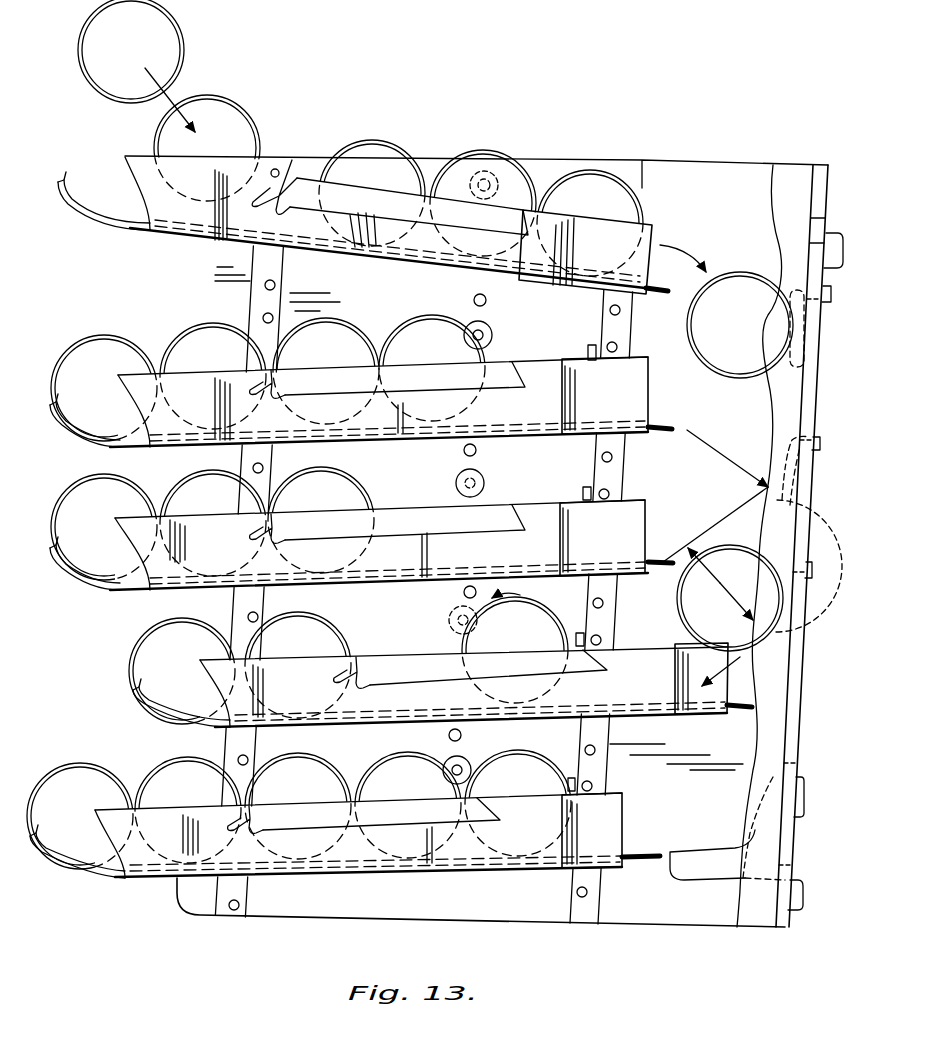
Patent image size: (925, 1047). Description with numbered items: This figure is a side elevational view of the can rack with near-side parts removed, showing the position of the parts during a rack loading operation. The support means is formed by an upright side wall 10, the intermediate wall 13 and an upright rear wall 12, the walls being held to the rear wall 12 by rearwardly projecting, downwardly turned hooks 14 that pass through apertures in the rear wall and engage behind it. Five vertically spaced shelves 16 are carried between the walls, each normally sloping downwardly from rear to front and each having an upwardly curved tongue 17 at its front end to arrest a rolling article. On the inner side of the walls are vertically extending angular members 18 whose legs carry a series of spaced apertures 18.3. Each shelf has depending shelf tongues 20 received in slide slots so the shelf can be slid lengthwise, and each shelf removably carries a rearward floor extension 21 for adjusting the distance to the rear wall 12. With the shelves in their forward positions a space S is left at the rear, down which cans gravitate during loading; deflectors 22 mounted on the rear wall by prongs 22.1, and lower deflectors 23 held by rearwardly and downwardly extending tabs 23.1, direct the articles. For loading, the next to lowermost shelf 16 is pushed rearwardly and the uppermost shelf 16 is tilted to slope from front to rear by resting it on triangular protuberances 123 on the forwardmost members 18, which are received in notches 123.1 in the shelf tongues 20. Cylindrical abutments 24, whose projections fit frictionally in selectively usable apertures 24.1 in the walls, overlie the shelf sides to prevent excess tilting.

The side wall 10 is at (792, 178).
The rear wall 12 is at (794, 717).
The intermediate wall 13 is at (665, 178).
The hook 14 is at (808, 262).
The shelf 16 is at (102, 232).
The upwardly curved tongue 17 is at (66, 190).
The angular member 18 is at (262, 305).
The apertures 18.3 is at (617, 346).
The shelf tongue 20 is at (408, 213).
The shelf floor extension 21 is at (657, 412).
The deflector 22 is at (792, 362).
The prong 22.1 is at (810, 437).
The lower deflector 23 is at (693, 887).
The tab 23.1 is at (800, 780).
The abutment 24 is at (500, 168).
The apertures 24.1 is at (464, 452).
The triangular protuberance 123 is at (262, 210).
The notch 123.1 is at (288, 207).
The space S is at (716, 193).